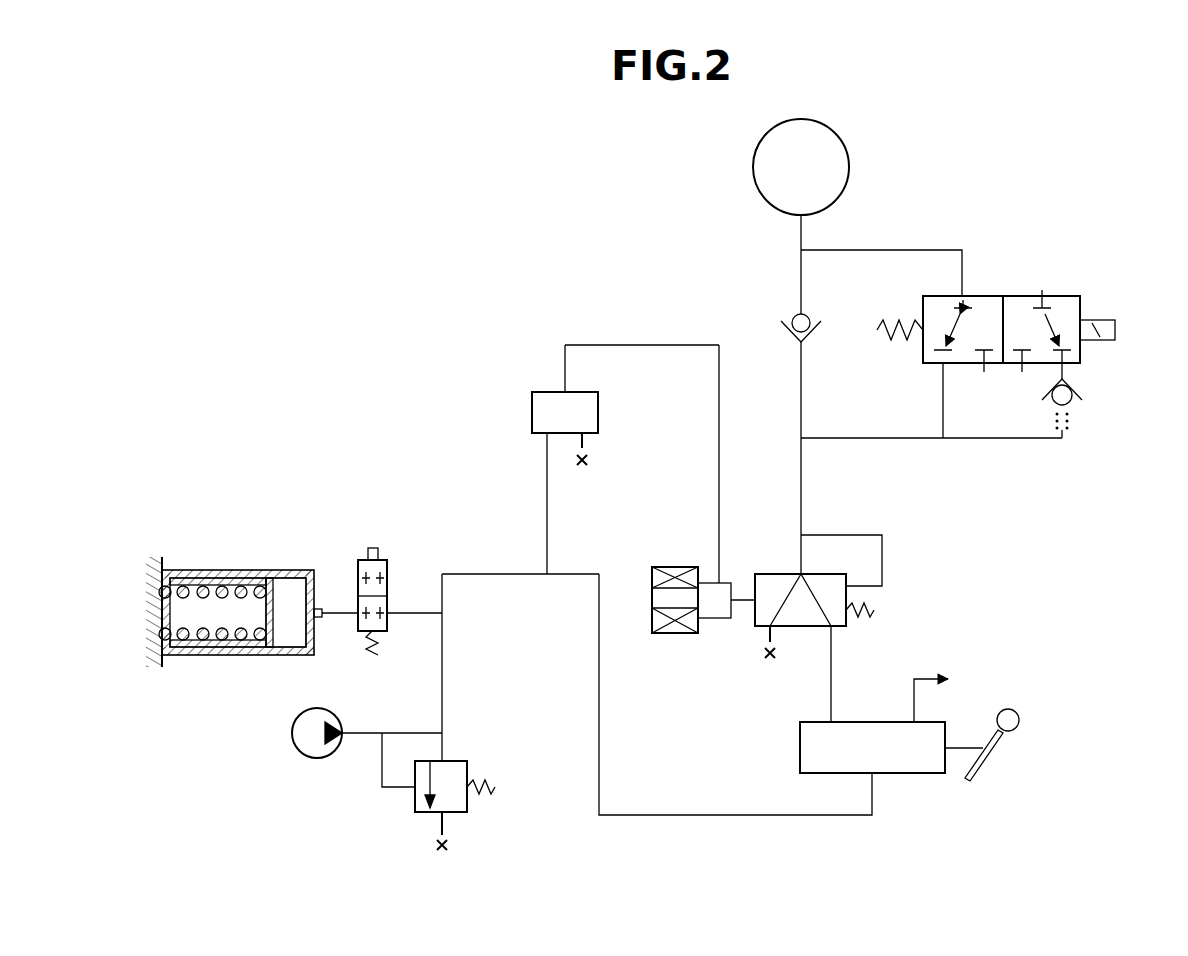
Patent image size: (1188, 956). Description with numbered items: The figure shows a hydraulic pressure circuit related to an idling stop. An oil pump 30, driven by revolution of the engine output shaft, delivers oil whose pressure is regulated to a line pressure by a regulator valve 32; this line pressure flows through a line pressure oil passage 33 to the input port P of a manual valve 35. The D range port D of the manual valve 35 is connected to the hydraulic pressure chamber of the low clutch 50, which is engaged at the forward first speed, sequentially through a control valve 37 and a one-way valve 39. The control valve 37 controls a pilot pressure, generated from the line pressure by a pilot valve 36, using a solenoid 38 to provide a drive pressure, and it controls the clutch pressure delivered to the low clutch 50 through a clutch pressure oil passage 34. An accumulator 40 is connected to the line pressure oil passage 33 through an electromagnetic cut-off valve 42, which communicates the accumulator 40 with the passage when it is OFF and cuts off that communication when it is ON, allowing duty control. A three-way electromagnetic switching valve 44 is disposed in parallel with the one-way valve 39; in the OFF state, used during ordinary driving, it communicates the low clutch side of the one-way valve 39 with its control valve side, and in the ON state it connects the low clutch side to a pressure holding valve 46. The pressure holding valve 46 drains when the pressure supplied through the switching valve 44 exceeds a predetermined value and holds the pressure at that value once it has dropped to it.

The oil pump 30 is at (292, 733).
The regulator valve 32 is at (455, 814).
The line pressure oil passage 33 is at (442, 668).
The clutch pressure oil passage 34 is at (803, 497).
The manual valve 35 is at (800, 746).
The pilot valve 36 is at (540, 391).
The control valve 37 is at (777, 572).
The solenoid 38 is at (676, 566).
The one-way valve 39 is at (784, 336).
The accumulator 40 is at (255, 568).
The electromagnetic cut-off valve 42 is at (360, 558).
The three-way electromagnetic switching valve 44 is at (1075, 296).
The pressure holding valve 46 is at (1082, 399).
The low clutch 50 is at (753, 170).